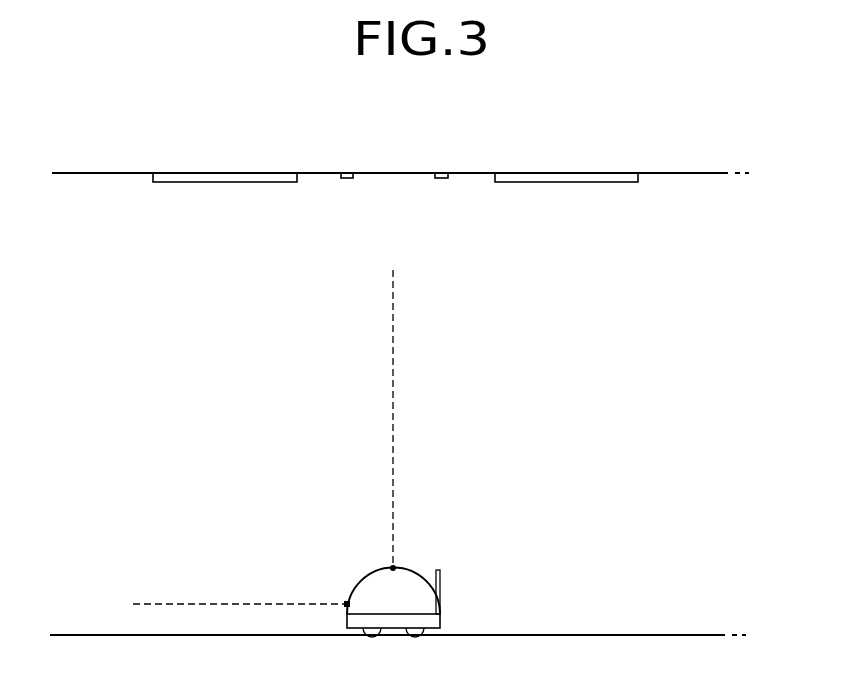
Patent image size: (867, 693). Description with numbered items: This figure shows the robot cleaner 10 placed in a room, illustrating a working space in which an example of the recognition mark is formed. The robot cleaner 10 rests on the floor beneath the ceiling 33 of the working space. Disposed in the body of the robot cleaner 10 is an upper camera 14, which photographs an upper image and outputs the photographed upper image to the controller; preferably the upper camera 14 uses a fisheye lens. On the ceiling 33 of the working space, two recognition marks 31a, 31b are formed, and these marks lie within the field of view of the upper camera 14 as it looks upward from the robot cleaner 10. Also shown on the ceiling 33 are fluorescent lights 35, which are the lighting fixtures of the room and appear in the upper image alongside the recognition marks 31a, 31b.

The robot cleaner 10 is at (416, 582).
The upper camera 14 is at (393, 567).
The recognition mark 31a is at (345, 178).
The recognition mark 31b is at (440, 178).
The ceiling 33 is at (394, 172).
The fluorescent light 35 is at (265, 182).